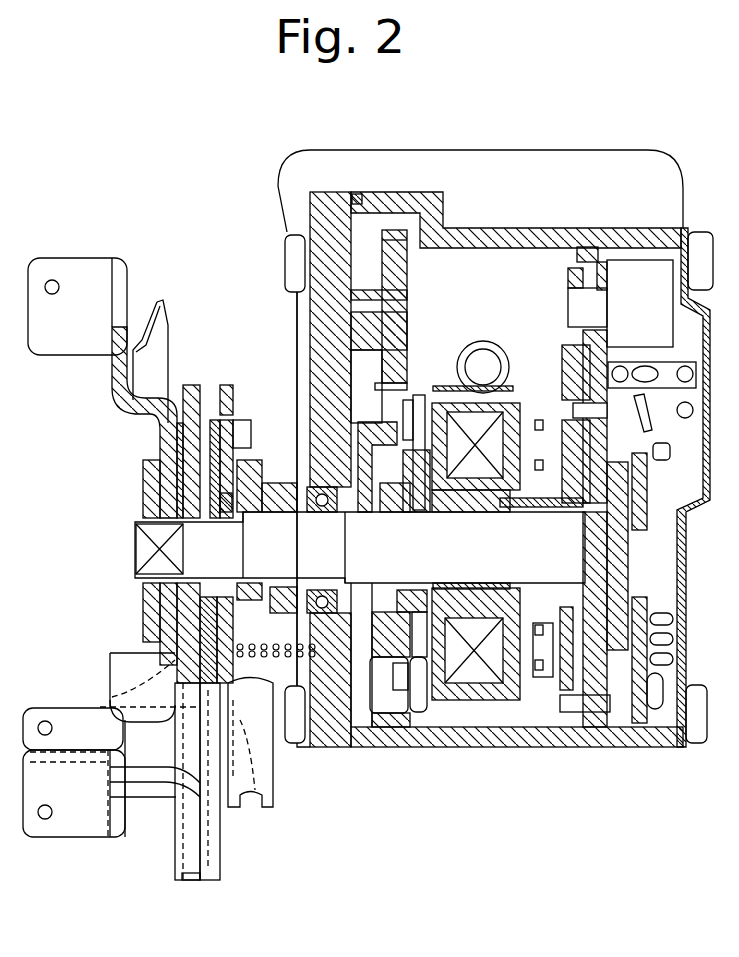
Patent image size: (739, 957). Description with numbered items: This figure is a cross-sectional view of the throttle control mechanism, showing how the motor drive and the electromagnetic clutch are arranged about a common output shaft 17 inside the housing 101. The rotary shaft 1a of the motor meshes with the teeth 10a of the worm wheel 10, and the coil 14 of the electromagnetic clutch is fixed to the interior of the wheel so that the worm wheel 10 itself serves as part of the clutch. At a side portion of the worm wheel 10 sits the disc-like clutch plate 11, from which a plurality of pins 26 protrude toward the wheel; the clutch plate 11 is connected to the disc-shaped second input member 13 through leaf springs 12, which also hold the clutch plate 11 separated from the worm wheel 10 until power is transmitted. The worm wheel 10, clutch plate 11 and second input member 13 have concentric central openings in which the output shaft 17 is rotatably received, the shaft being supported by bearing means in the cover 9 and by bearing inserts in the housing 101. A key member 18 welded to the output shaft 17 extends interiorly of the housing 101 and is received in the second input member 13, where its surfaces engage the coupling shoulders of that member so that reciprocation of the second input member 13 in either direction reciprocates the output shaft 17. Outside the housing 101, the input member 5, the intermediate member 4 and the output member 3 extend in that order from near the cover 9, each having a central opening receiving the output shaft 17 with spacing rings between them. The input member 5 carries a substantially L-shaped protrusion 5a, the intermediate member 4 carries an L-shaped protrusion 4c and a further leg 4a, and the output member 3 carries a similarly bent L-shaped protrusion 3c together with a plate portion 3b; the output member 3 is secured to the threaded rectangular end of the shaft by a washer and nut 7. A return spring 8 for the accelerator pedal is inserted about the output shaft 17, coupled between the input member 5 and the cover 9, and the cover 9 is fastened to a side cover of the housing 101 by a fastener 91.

The rotary shaft 1a is at (484, 362).
The output member 3 is at (136, 407).
The lower mounting plate 3b is at (82, 827).
The protrusion 3c is at (80, 272).
The intermediate member 4 is at (192, 385).
The bracket leg 4a is at (150, 753).
The protrusion 4c is at (75, 715).
The input member 5 is at (228, 387).
The protrusion 5a is at (207, 870).
The nut 7 is at (150, 600).
The return spring 8 is at (303, 742).
The cover 9 is at (335, 742).
The worm wheel 10 is at (515, 700).
The teeth 10a is at (455, 703).
The clutch plate 11 is at (422, 703).
The leaf spring 12 is at (392, 700).
The second input member 13 is at (387, 635).
The coil 14 is at (480, 676).
The output shaft 17 is at (287, 540).
The key member 18 is at (357, 427).
The pin 26 is at (420, 390).
The fastener 91 is at (290, 255).
The housing 101 is at (694, 166).